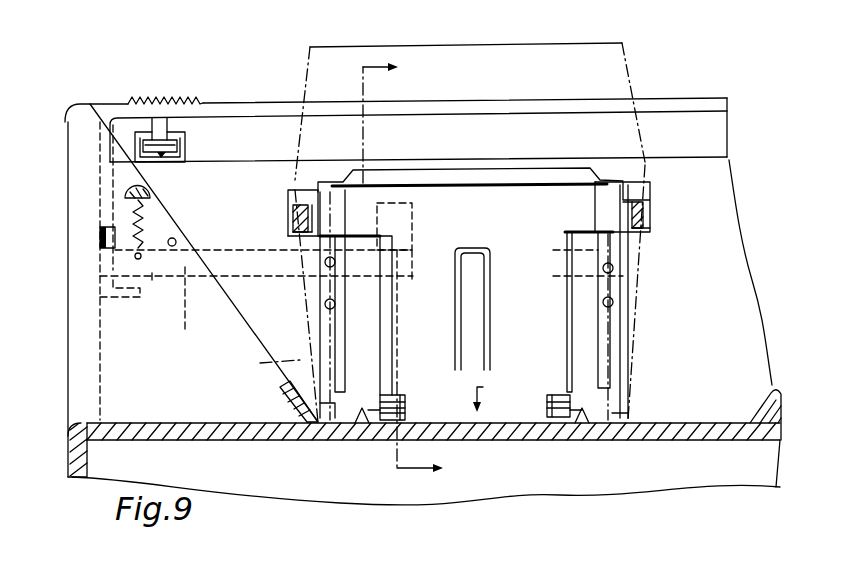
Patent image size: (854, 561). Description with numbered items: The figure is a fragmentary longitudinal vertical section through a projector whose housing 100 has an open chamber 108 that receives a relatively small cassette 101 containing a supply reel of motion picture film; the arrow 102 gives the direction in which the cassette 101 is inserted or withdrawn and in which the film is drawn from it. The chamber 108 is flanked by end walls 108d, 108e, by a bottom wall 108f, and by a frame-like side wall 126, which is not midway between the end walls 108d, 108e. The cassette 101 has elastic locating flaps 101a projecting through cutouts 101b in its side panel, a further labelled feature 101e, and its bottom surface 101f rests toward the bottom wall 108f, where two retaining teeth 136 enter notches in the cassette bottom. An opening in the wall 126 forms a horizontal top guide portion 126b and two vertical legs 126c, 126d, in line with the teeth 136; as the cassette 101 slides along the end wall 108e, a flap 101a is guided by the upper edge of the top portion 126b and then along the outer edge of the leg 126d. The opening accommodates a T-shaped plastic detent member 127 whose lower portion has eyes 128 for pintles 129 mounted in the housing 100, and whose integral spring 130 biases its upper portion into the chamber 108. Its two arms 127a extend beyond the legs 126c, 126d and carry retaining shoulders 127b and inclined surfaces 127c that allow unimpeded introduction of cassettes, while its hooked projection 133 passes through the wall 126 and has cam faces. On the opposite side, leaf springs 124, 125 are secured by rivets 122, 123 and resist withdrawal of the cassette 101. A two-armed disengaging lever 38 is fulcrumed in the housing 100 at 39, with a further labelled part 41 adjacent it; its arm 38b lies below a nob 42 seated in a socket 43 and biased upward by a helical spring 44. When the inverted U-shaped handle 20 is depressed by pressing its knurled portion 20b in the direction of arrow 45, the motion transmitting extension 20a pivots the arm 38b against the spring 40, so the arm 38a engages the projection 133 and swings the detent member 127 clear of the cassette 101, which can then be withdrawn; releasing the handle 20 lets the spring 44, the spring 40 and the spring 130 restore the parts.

The housing 100 is at (74, 106).
The handle 20 is at (253, 104).
The motion transmitting extension 20a is at (113, 279).
The knurled or milled portion 20b is at (175, 98).
The disengaging lever 38 is at (185, 286).
The arm 38a is at (405, 268).
The arm 38b is at (140, 286).
The fulcrum 39 is at (222, 291).
The spring 40 is at (153, 203).
The pin 41 is at (176, 238).
The nob 42 is at (155, 127).
The socket 43 is at (185, 142).
The helical spring 44 is at (160, 152).
The arrow 45 is at (157, 76).
The cassette 101 is at (520, 40).
The elastic locating flaps 101a is at (292, 213).
The openings or cutouts 101b is at (293, 225).
The recess 101e is at (290, 206).
The bottom surface 101f is at (500, 424).
The arrow 102 is at (492, 398).
The chamber 108 is at (618, 120).
The end wall 108d is at (775, 390).
The end wall 108e is at (290, 398).
The bottom wall 108f is at (700, 427).
The rivet 122 is at (325, 266).
The rivet 123 is at (327, 306).
The leaf spring 124 is at (277, 364).
The leaf spring 125 is at (623, 276).
The frame-like second side wall 126 is at (559, 158).
The horizontal top guide portion 126b is at (459, 176).
The vertical guide portion or leg 126c is at (320, 422).
The vertical guide portion or leg 126d is at (587, 360).
The detent member 127 is at (541, 331).
The arms 127a is at (324, 192).
The retaining shoulders 127b is at (298, 180).
The inclined surfaces 127c is at (652, 187).
The eyes 128 is at (393, 395).
The pintles 129 is at (390, 413).
The spring 130 is at (488, 292).
The hooked projection 133 is at (412, 222).
The retaining protuberances or teeth 136 is at (342, 420).